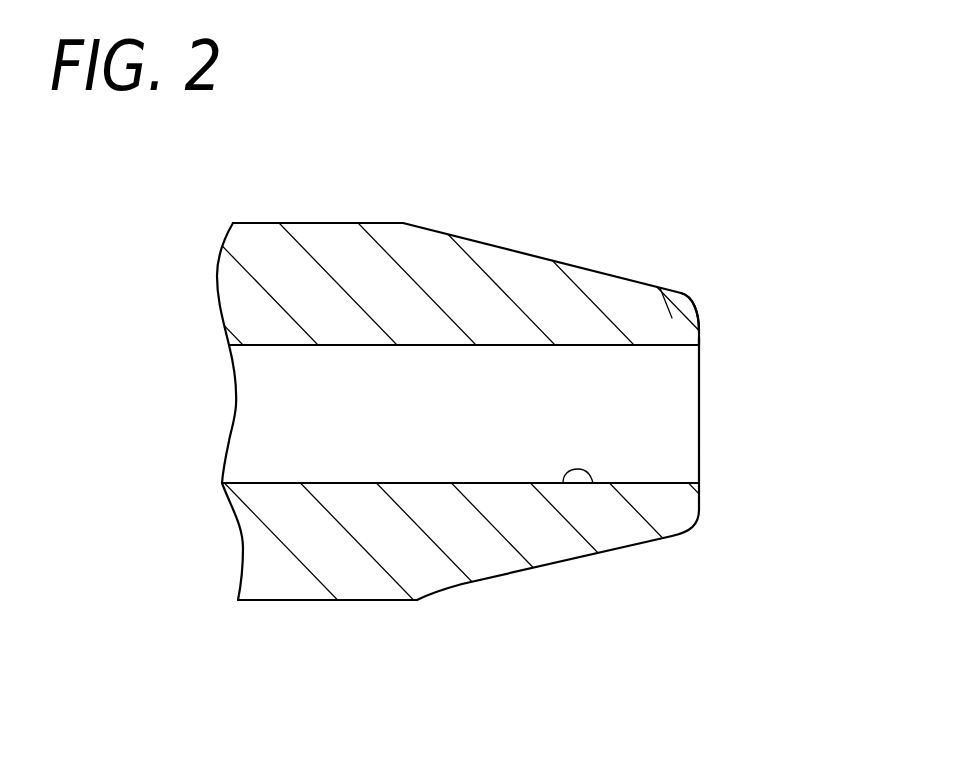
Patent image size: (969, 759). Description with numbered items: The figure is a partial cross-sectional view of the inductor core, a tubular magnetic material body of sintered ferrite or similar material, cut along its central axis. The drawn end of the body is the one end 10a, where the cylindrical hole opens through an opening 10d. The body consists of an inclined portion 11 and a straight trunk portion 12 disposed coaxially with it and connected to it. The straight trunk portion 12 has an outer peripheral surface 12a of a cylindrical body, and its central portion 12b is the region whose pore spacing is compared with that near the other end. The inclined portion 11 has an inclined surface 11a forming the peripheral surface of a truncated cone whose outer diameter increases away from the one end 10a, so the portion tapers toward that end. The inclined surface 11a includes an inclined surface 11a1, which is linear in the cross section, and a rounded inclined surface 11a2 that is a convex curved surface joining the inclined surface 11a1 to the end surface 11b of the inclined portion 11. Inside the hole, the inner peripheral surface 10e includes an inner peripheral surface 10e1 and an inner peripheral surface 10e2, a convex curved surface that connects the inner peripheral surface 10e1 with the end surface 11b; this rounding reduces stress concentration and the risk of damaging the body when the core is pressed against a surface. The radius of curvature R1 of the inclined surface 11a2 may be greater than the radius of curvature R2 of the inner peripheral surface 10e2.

The one end 10a is at (702, 392).
The opening 10d is at (700, 460).
The inner peripheral surface 10e is at (258, 347).
The inner peripheral surface 10e1 is at (563, 483).
The inner peripheral surface 10e2 is at (700, 482).
The inclined portion 11 is at (625, 415).
The inclined surface 11a is at (625, 226).
The inclined surface 11a1 is at (520, 252).
The inclined surface 11a2 is at (695, 308).
The end surface 11b is at (700, 328).
The straight trunk portion 12 is at (339, 392).
The outer peripheral surface 12a is at (337, 222).
The central portion 12b is at (250, 222).
The radius of curvature R1 is at (685, 293).
The radius of curvature R2 is at (699, 345).